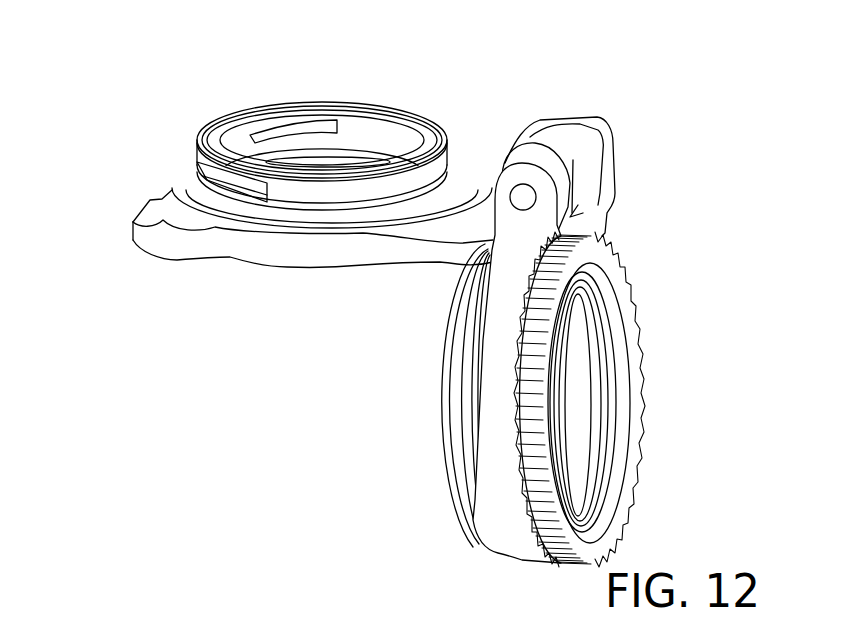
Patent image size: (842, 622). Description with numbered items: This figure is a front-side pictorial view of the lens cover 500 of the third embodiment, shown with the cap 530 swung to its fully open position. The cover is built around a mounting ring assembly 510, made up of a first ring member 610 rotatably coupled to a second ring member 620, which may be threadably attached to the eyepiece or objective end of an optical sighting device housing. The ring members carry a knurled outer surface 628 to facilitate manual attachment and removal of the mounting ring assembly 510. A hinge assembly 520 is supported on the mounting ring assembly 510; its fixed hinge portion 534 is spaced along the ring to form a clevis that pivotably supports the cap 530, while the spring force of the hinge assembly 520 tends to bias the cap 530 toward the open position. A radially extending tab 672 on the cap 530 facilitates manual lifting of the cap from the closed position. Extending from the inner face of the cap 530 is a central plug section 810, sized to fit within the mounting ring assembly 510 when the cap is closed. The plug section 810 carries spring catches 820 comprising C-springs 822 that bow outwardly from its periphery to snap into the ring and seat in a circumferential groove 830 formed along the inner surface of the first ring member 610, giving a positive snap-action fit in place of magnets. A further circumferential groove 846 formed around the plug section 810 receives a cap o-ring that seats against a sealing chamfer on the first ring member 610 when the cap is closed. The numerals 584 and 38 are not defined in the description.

The lens cover 500 is at (722, 113).
The mounting ring assembly 510 is at (412, 537).
The hinge assembly 520 is at (617, 90).
The cap 530 is at (263, 253).
The fixed hinge portion 534 is at (511, 232).
The handle cap 584 is at (592, 165).
The first ring member 610 is at (452, 373).
The second ring member 620 is at (490, 397).
The knurled outer surface 628 is at (622, 245).
The radially extending tab 672 is at (148, 218).
The central plug section 810 is at (437, 120).
The spring catch 820 is at (285, 122).
The C-spring 822 is at (215, 182).
The circumferential groove 830 is at (598, 312).
The circumferential groove 846 is at (329, 222).
The front face groove 38 is at (612, 343).